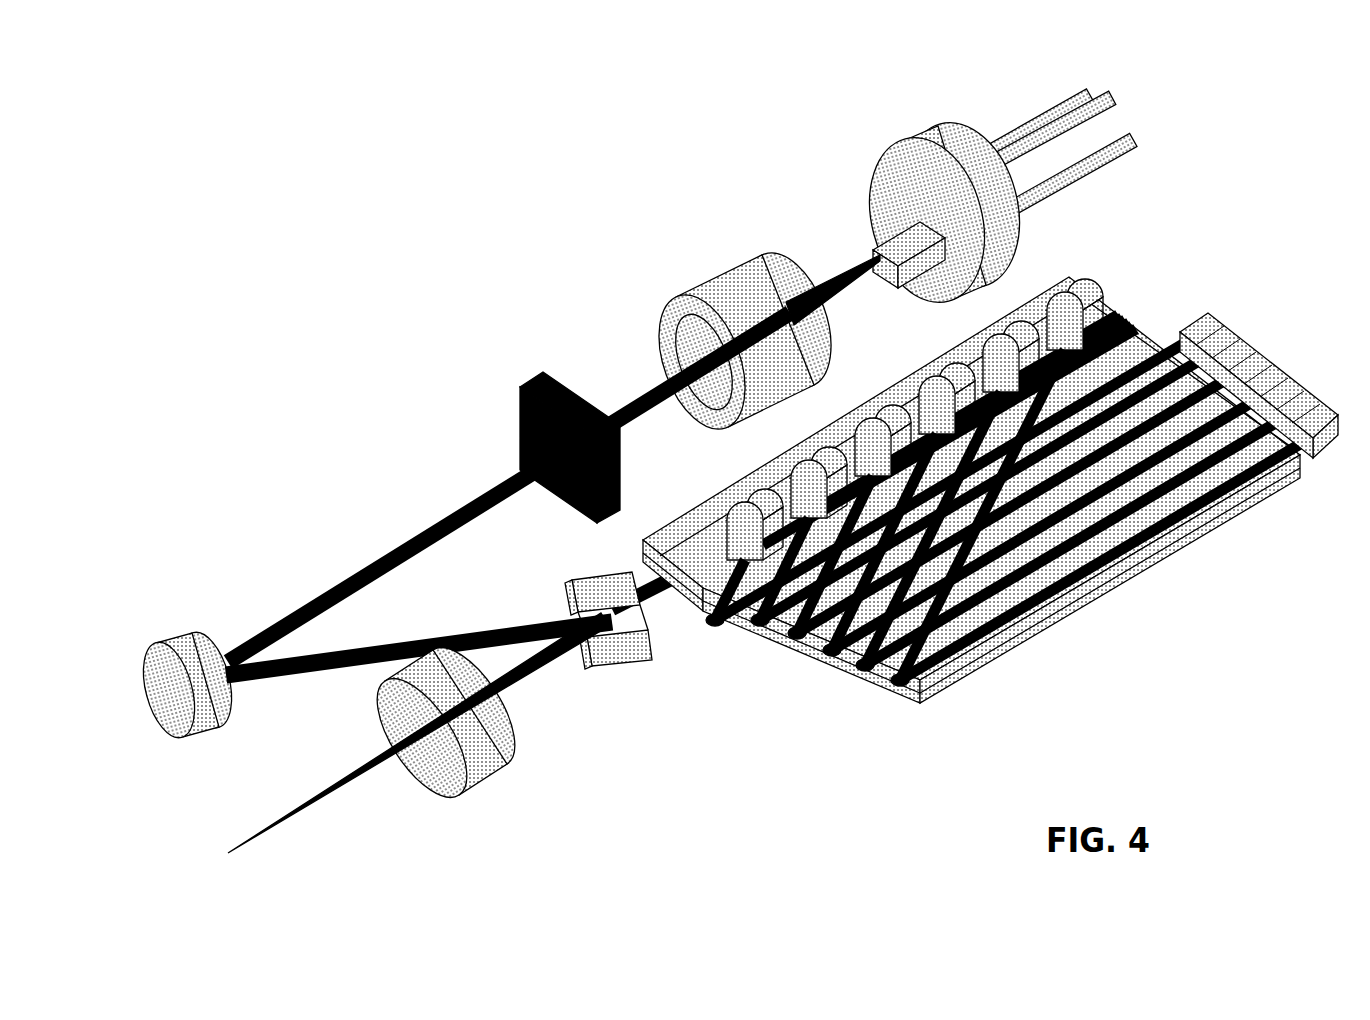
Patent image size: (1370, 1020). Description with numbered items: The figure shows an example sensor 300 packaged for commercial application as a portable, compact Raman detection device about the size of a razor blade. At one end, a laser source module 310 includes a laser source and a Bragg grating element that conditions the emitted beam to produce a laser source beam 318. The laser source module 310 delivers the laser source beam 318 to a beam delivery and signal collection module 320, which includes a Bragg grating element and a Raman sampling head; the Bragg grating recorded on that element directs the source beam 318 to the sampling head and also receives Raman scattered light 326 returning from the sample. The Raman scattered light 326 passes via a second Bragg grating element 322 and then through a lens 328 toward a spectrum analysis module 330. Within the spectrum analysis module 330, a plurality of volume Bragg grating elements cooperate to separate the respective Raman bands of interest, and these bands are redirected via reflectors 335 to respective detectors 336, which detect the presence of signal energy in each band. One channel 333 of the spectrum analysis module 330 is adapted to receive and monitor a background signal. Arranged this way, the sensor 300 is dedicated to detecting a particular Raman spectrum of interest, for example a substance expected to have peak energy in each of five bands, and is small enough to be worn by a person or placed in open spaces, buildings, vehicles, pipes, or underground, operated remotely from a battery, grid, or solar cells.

The sensor 300 is at (560, 208).
The laser source module 310 is at (882, 254).
The laser source beam 318 is at (492, 497).
The beam delivery and signal collection module 320 is at (155, 640).
The second Bragg grating element 322 is at (611, 654).
The Raman scattered light 326 is at (376, 646).
The lens 328 is at (443, 765).
The spectrum analysis module 330 is at (1232, 272).
The channel 333 is at (710, 625).
The reflectors 335 is at (805, 644).
The detectors 336 is at (1262, 340).